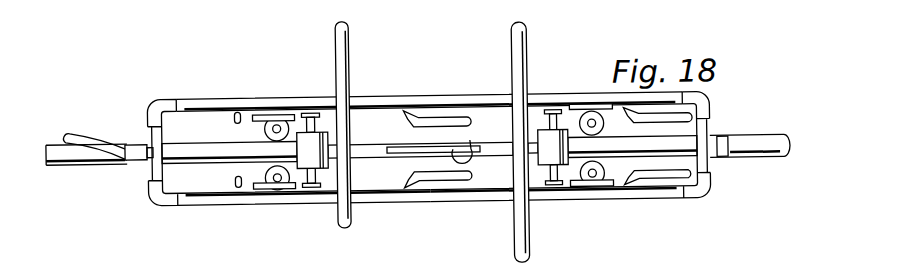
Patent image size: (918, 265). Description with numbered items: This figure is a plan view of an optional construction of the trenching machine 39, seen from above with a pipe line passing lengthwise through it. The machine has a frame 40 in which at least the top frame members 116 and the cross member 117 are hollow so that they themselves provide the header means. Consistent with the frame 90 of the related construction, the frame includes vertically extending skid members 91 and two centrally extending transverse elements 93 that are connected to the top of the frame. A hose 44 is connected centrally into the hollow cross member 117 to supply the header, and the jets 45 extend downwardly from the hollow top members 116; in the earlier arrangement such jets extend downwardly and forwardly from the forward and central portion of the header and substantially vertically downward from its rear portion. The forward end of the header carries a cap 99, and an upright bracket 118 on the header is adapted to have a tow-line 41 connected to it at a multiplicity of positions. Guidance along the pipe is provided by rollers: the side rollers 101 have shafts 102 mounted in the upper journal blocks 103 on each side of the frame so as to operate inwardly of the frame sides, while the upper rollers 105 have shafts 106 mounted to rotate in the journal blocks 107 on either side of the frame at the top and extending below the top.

The trenching machine 39 is at (212, 203).
The frame 40 is at (768, 143).
The tow-line 41 is at (469, 140).
The hose 44 is at (88, 135).
The jets 45 is at (411, 180).
The frame 90 is at (607, 204).
The skid members 91 is at (493, 203).
The transverse elements 93 is at (352, 216).
The cap 99 is at (731, 147).
The side rollers 101 is at (279, 143).
The shafts 102 is at (273, 126).
The upper journal blocks 103 is at (285, 113).
The upper rollers 105 is at (313, 150).
The shafts 106 is at (324, 186).
The journal blocks 107 is at (317, 111).
The top frame members 116 is at (392, 102).
The cross member 117 is at (150, 128).
The upright bracket 118 is at (413, 146).